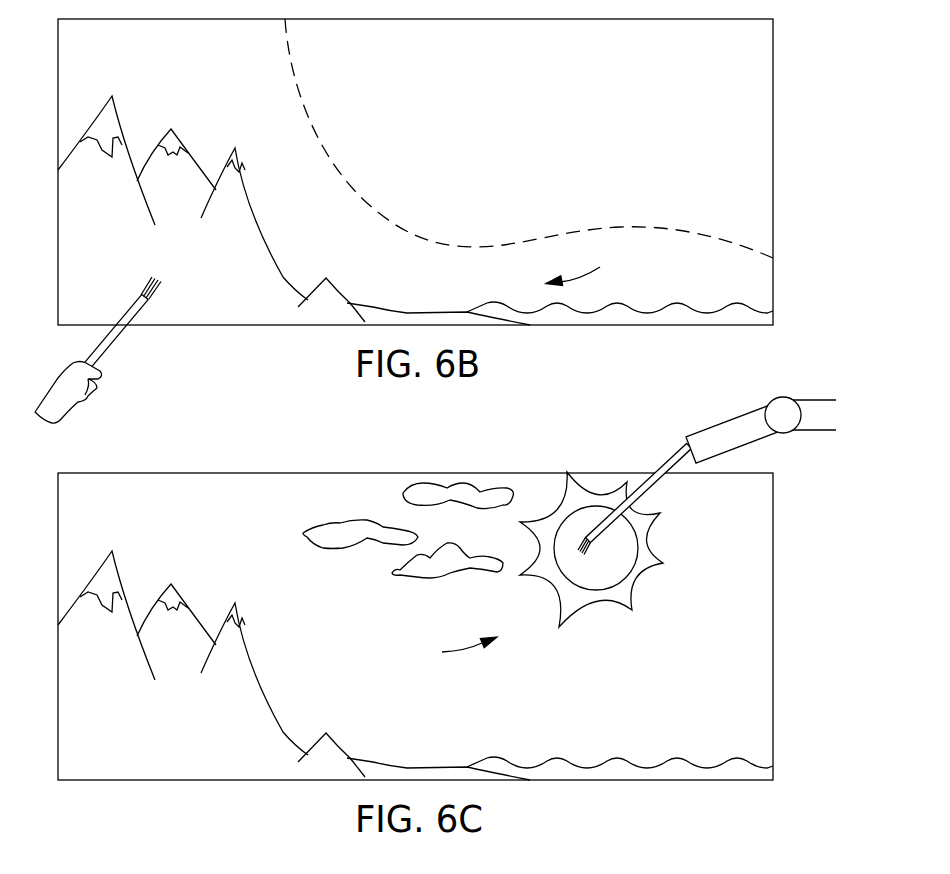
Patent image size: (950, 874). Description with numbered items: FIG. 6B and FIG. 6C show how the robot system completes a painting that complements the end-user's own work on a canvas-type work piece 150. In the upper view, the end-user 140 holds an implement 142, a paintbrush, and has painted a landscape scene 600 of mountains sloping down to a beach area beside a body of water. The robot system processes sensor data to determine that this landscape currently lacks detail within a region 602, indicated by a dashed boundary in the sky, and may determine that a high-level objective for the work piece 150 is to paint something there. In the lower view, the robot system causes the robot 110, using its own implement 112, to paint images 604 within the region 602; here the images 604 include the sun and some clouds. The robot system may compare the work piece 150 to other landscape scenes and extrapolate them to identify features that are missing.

In FIG. 6B, the work piece 150 is at (725, 78).
In FIG. 6C, the work piece 150 is at (725, 533).
In FIG. 6B, the region 602 is at (466, 248).
In FIG. 6B, the landscape scene 600 is at (585, 260).
In FIG. 6B, the end-user 140 is at (45, 393).
In FIG. 6B, the implement 142 is at (100, 357).
In FIG. 6C, the robot 110 is at (812, 400).
In FIG. 6C, the implement 112 is at (672, 460).
In FIG. 6C, the images 604 is at (448, 650).